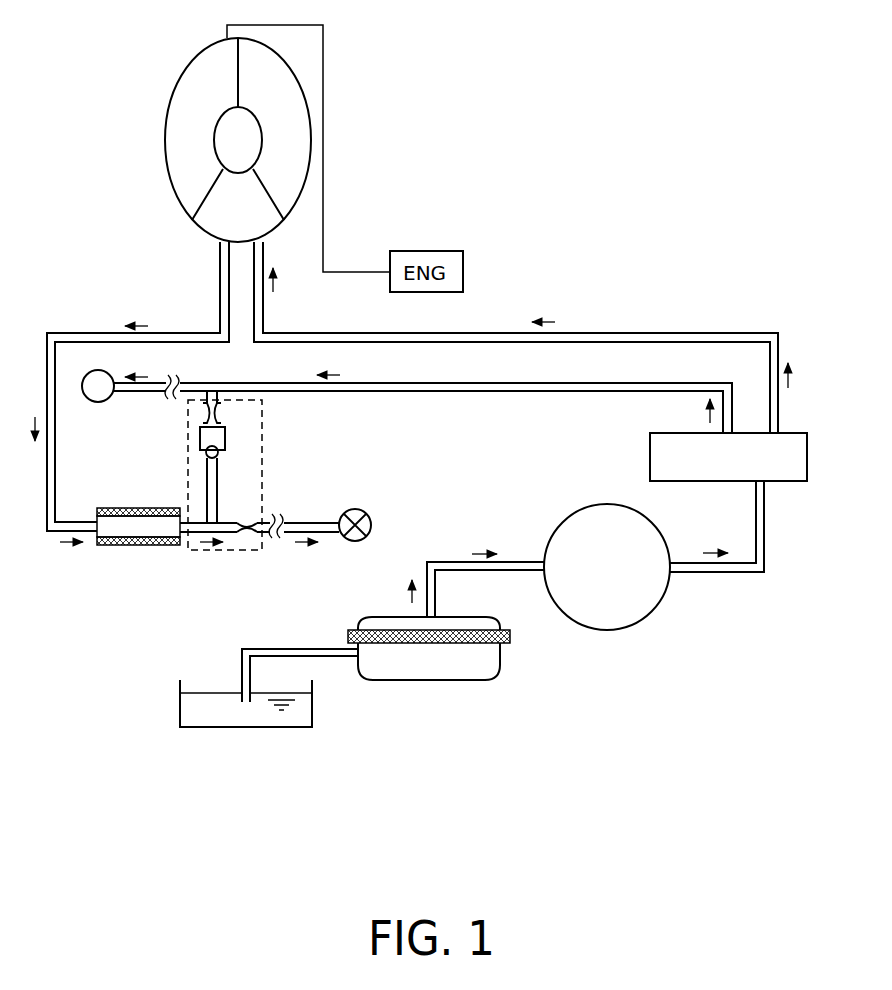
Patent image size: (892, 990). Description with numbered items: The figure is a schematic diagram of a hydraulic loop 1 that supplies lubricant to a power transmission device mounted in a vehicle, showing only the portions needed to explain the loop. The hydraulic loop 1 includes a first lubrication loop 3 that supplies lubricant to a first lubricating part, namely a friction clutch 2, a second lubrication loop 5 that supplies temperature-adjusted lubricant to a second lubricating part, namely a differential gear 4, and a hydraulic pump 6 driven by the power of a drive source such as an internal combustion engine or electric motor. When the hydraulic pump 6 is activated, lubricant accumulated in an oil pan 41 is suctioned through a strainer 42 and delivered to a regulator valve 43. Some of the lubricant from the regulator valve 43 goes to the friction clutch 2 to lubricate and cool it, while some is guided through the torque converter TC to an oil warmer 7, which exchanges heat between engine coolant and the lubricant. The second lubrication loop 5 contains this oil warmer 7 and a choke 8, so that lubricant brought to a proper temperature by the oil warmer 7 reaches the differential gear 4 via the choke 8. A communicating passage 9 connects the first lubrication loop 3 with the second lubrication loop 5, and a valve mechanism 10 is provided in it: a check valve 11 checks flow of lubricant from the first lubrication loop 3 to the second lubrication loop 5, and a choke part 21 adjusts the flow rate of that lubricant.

The hydraulic loop 1 is at (612, 236).
The first lubricating part (friction clutch) 2 is at (98, 402).
The first lubrication loop 3 is at (406, 402).
The second lubricating part (differential gear) 4 is at (354, 511).
The second lubrication loop 5 is at (119, 533).
The hydraulic pump 6 is at (607, 567).
The oil warmer 7 is at (140, 508).
The choke for the second lubrication loop 8 is at (243, 534).
The communicating passage 9 is at (215, 488).
The valve mechanism 10 is at (222, 501).
The check valve 11 is at (224, 443).
The choke part 21 is at (215, 412).
The oil pan 41 is at (180, 703).
The strainer 42 is at (500, 652).
The regulator valve 43 is at (650, 458).
The torque converter TC is at (193, 48).